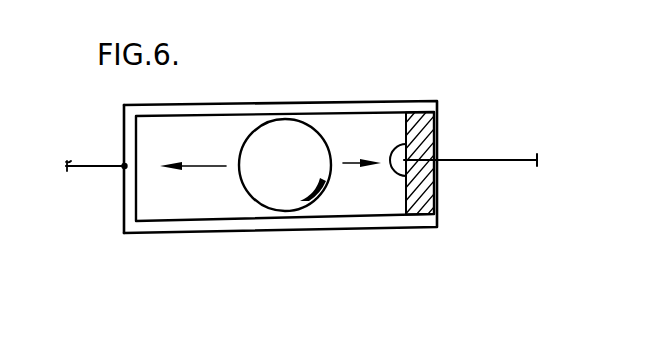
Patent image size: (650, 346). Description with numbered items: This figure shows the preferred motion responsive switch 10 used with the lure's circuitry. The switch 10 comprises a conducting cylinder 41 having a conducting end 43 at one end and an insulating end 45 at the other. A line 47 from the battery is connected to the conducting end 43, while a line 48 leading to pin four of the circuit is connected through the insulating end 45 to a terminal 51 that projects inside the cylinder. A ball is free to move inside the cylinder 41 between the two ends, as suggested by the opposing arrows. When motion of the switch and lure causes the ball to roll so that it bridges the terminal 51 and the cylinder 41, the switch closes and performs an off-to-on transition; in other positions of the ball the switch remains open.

The motion responsive switch 10 is at (268, 78).
The conducting cylinder 41 is at (351, 105).
The conducting end 43 is at (125, 188).
The insulating end 45 is at (434, 192).
The line 47 is at (82, 165).
The line 48 is at (488, 160).
The terminal 51 is at (390, 174).